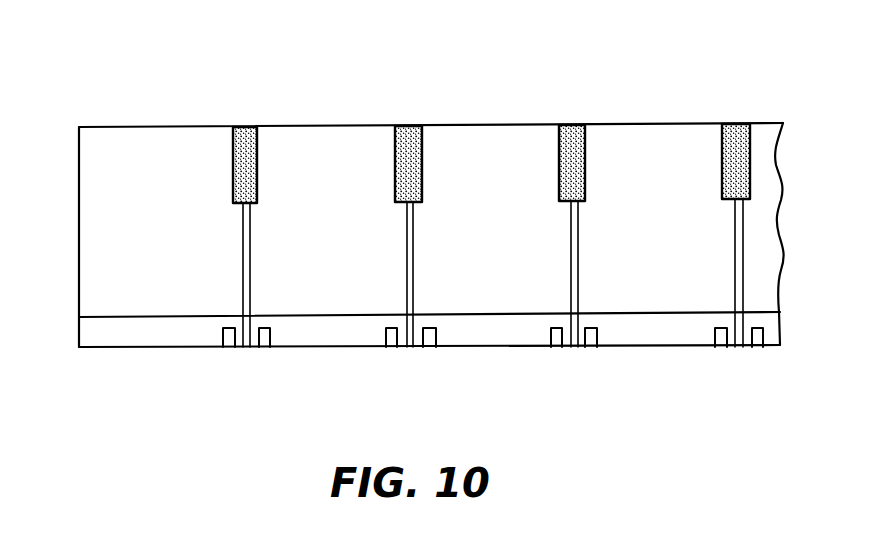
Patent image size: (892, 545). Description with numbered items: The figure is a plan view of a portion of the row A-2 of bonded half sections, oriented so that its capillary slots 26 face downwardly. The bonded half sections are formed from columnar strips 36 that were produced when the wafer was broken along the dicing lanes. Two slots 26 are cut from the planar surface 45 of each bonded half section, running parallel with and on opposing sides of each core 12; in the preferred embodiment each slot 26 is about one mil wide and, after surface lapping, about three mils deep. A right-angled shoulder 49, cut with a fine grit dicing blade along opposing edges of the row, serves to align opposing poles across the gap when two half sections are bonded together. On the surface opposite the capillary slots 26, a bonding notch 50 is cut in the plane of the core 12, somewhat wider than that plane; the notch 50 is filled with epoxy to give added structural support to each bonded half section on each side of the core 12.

The bonding notch 50 is at (242, 127).
The columnar strip 36 is at (323, 167).
The right-angled shoulder 49 is at (484, 330).
The planar surface 45 is at (140, 348).
The capillary slot 26 is at (228, 349).
The core 12 is at (246, 348).
The row of bonded half sections A-2 is at (780, 287).